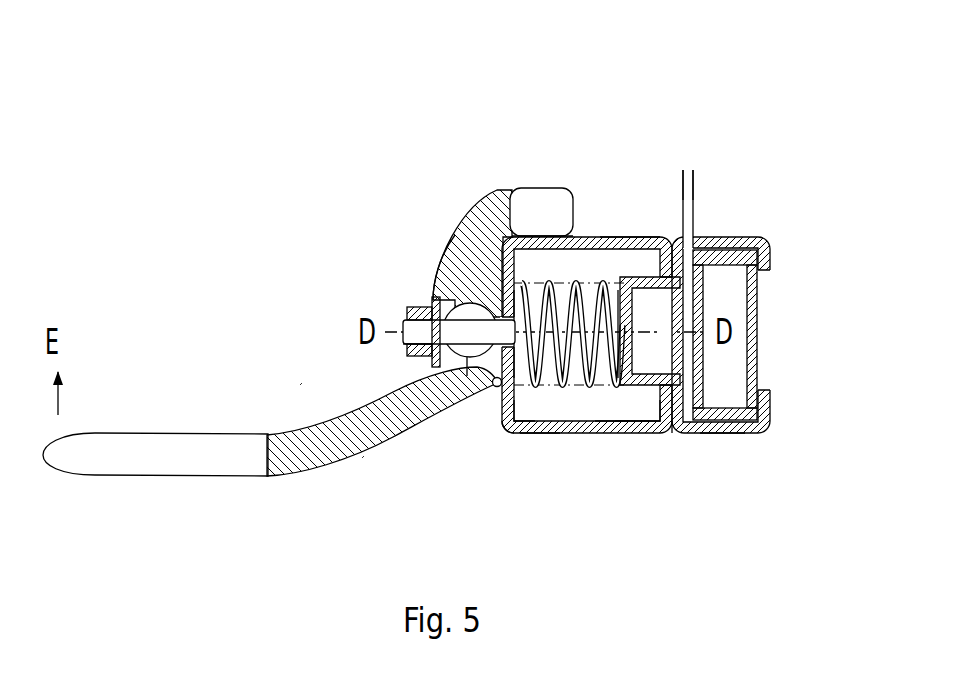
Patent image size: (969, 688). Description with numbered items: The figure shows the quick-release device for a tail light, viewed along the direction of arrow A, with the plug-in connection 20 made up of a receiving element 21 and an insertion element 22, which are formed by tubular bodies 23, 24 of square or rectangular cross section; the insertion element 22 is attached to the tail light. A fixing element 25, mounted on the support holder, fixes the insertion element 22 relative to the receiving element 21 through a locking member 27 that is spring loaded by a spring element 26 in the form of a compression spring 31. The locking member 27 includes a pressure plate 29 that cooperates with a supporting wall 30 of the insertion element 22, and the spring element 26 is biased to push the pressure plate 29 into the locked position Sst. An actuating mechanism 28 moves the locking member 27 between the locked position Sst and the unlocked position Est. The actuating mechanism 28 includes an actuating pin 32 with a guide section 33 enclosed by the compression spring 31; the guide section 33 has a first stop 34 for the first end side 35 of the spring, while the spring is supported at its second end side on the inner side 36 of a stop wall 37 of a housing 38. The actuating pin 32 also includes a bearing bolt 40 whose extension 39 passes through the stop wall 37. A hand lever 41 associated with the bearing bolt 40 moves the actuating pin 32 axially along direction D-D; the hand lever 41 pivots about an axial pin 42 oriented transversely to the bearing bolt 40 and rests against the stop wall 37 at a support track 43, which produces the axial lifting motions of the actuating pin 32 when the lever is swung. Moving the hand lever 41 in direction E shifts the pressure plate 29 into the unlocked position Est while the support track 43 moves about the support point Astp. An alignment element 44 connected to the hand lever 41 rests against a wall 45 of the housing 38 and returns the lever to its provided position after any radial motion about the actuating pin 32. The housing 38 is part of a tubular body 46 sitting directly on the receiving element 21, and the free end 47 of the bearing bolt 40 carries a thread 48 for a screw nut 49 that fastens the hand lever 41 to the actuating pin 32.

The plug-in connection 20 is at (774, 276).
The receiving element 21 is at (737, 233).
The insertion element 22 is at (788, 283).
The tubular body 23 is at (722, 433).
The tubular body 24 is at (752, 302).
The fixing element 25 is at (436, 440).
The spring element 26 is at (559, 276).
The locking member 27 is at (648, 397).
The actuating mechanism 28 is at (300, 385).
The pressure plate 29 is at (707, 273).
The supporting wall 30 is at (674, 435).
The compression spring 31 is at (587, 310).
The actuating pin 32 is at (533, 433).
The guide section 33 is at (622, 285).
The first stop 34 is at (763, 408).
The first end side 35 is at (613, 397).
The inner side 36 is at (533, 194).
The stop wall 37 is at (502, 405).
The housing 38 is at (638, 235).
The extension 39 is at (472, 385).
The bearing bolt 40 is at (435, 296).
The hand lever 41 is at (145, 480).
The axial pin 42 is at (433, 280).
The support track 43 is at (488, 257).
The alignment element 44 is at (538, 233).
The wall 45 is at (540, 208).
The tubular body 46 is at (630, 425).
The free end 47 is at (413, 283).
The thread 48 is at (407, 348).
The screw nut 49 is at (444, 318).
The unlocked position Est is at (682, 196).
The locked position Sst is at (694, 196).
The support point Astp is at (362, 460).